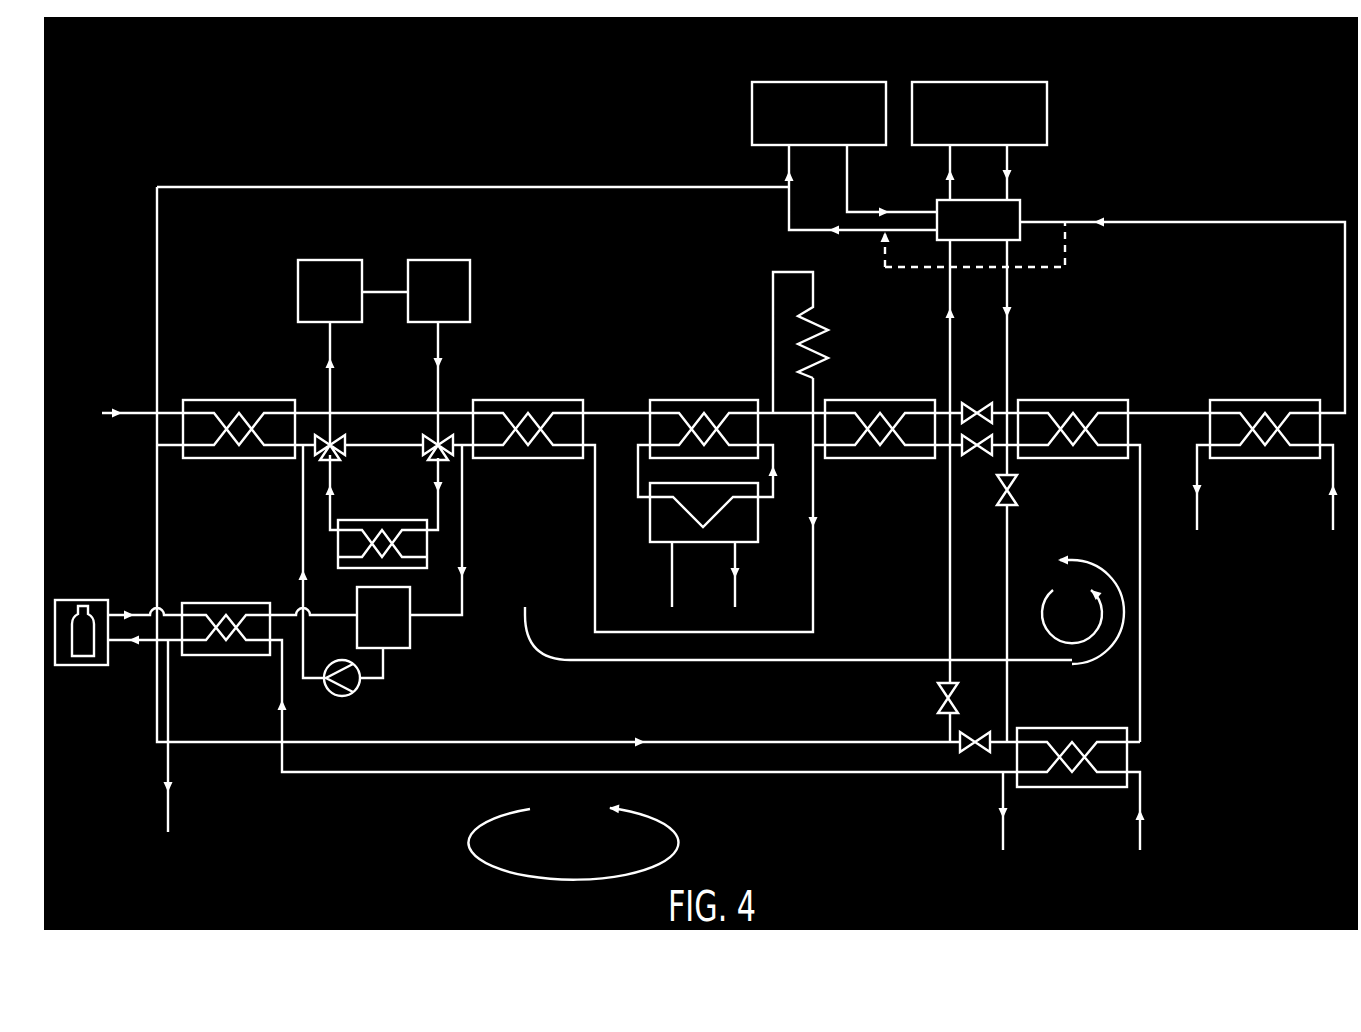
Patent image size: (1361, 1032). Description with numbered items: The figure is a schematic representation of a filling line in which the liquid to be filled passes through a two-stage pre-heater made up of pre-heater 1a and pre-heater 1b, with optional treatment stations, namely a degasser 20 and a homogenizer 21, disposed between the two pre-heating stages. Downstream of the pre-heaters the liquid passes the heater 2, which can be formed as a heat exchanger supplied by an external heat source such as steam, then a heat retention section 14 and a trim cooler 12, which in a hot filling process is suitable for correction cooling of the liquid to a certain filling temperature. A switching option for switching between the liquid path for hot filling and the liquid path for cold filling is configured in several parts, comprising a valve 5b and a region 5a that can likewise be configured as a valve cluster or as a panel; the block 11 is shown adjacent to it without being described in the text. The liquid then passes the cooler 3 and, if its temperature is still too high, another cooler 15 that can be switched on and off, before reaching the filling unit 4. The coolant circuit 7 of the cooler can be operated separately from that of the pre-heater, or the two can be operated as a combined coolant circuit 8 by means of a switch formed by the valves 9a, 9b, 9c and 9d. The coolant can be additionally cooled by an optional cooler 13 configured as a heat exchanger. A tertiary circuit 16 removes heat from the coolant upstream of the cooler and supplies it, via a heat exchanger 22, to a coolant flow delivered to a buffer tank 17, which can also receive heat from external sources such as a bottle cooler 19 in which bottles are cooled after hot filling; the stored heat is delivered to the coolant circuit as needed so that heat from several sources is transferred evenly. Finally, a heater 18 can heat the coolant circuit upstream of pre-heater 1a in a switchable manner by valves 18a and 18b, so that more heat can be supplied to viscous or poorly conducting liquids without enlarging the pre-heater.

The pre-heater 1a is at (275, 400).
The pre-heater 1b is at (564, 400).
The heater 2 is at (740, 400).
The cooler 3 is at (1108, 400).
The filling unit 4 is at (1027, 82).
The region of the switching option 5a is at (1020, 212).
The valve of the switching option 5b is at (983, 403).
The coolant circuit of the cooler 7 is at (1070, 660).
The combined coolant circuit 8 is at (1092, 562).
The valve 9a is at (938, 696).
The valve 9b is at (982, 732).
The valve 9c is at (1012, 492).
The valve 9d is at (970, 455).
The control unit 11 is at (867, 82).
The trim cooler 12 is at (915, 400).
The cooler 13 is at (1034, 728).
The heat retention section 14 is at (830, 346).
The cooler 15 is at (1298, 400).
The tertiary circuit 16 is at (678, 843).
The buffer tank 17 is at (410, 632).
The heater 18 is at (404, 520).
The valve 18a is at (342, 434).
The valve 18b is at (428, 434).
The bottle cooler 19 is at (87, 600).
The degasser 20 is at (340, 260).
The homogenizer 21 is at (450, 260).
The heat exchanger 22 is at (248, 603).